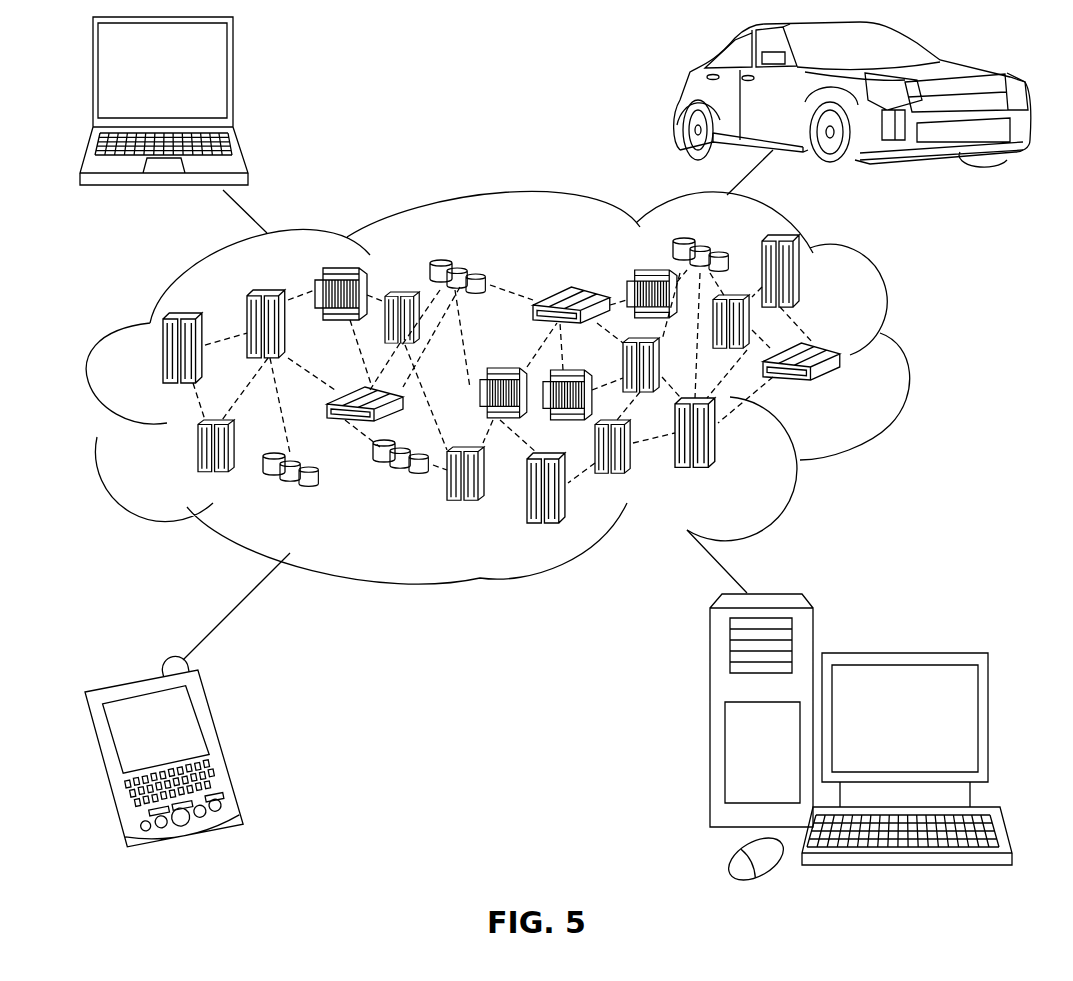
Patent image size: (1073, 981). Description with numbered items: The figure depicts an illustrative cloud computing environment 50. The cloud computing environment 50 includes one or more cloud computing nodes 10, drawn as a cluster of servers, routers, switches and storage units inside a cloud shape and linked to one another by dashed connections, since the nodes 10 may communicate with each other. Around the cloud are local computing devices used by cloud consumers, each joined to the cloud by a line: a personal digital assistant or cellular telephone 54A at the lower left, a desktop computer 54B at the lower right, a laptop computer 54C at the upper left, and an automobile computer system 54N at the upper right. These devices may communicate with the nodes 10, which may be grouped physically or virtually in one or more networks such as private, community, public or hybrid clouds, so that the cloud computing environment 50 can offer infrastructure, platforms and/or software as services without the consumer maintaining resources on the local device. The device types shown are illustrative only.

The laptop computer 54C is at (233, 82).
The automobile computer system 54N is at (680, 97).
The personal digital assistant or cellular telephone 54A is at (223, 748).
The desktop computer 54B is at (902, 653).
The cloud computing environment 50 is at (902, 357).
The cloud computing node 10 is at (845, 392).